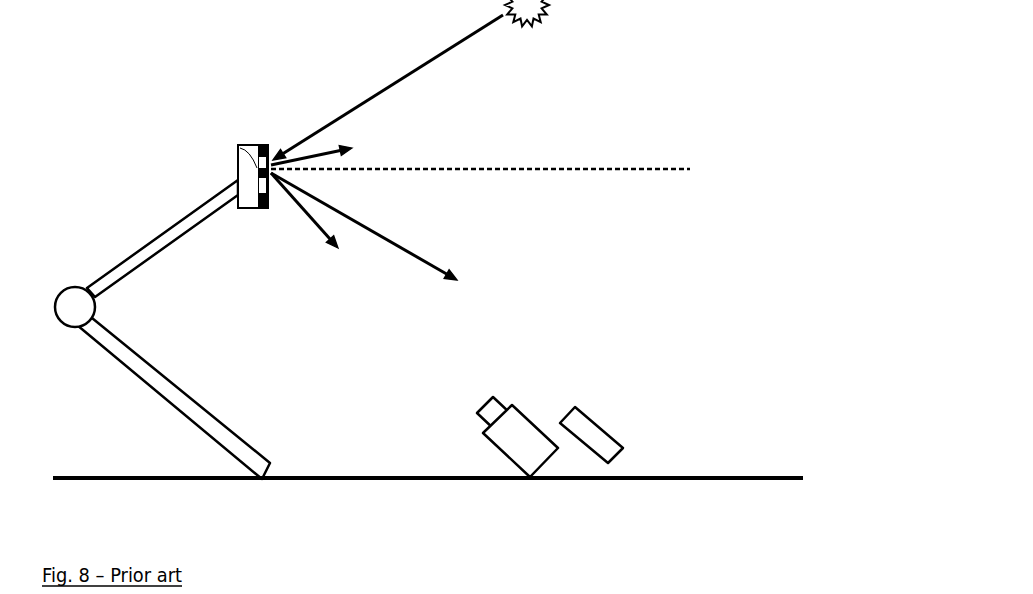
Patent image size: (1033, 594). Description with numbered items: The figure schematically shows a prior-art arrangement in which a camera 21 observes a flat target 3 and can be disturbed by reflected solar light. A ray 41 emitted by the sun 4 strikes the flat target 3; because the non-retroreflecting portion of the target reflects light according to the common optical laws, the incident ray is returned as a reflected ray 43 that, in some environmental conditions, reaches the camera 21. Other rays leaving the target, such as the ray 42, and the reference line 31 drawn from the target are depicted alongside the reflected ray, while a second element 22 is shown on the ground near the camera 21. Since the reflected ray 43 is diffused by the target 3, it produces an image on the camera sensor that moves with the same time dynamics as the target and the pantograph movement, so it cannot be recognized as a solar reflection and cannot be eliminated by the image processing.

The flat target 3 is at (238, 152).
The sun 4 is at (527, 33).
The ray emitted by the sun 41 is at (420, 78).
The reflected light beam 42 is at (447, 270).
The reflected ray 43 is at (313, 230).
The optical axis 31 is at (623, 177).
The camera 21 is at (515, 467).
The object 22 is at (600, 432).